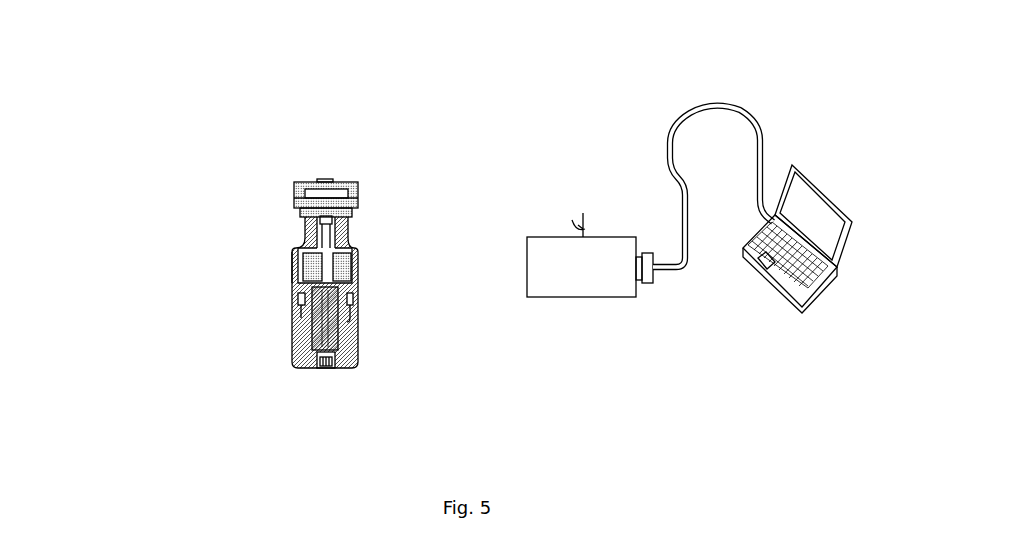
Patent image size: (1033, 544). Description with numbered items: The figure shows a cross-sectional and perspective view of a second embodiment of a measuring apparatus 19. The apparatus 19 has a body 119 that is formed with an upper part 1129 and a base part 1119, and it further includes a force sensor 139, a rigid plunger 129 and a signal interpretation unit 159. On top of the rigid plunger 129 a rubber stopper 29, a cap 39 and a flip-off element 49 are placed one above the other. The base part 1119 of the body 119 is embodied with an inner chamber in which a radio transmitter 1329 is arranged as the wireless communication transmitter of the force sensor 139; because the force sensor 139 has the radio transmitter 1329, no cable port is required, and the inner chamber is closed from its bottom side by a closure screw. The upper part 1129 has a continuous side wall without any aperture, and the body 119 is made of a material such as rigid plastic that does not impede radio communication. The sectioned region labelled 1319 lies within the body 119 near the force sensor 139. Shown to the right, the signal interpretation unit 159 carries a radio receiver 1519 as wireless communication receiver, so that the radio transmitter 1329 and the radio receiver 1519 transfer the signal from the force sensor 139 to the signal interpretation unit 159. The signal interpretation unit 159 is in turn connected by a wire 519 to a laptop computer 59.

The measuring apparatus 19 is at (359, 154).
The cap 39 is at (300, 197).
The flip-off element 49 is at (313, 182).
The rubber stopper 29 is at (338, 182).
The rigid plunger 129 is at (345, 227).
The upper part 1129 is at (286, 252).
The left sensing block 1319 is at (310, 265).
The force sensor 139 is at (358, 270).
The radio transmitter 1329 is at (323, 328).
The body 119 is at (327, 380).
The base part 1119 is at (367, 351).
The signal interpretation unit 159 is at (560, 267).
The radio receiver 1519 is at (584, 222).
The wire 519 is at (718, 105).
The laptop computer 59 is at (783, 278).